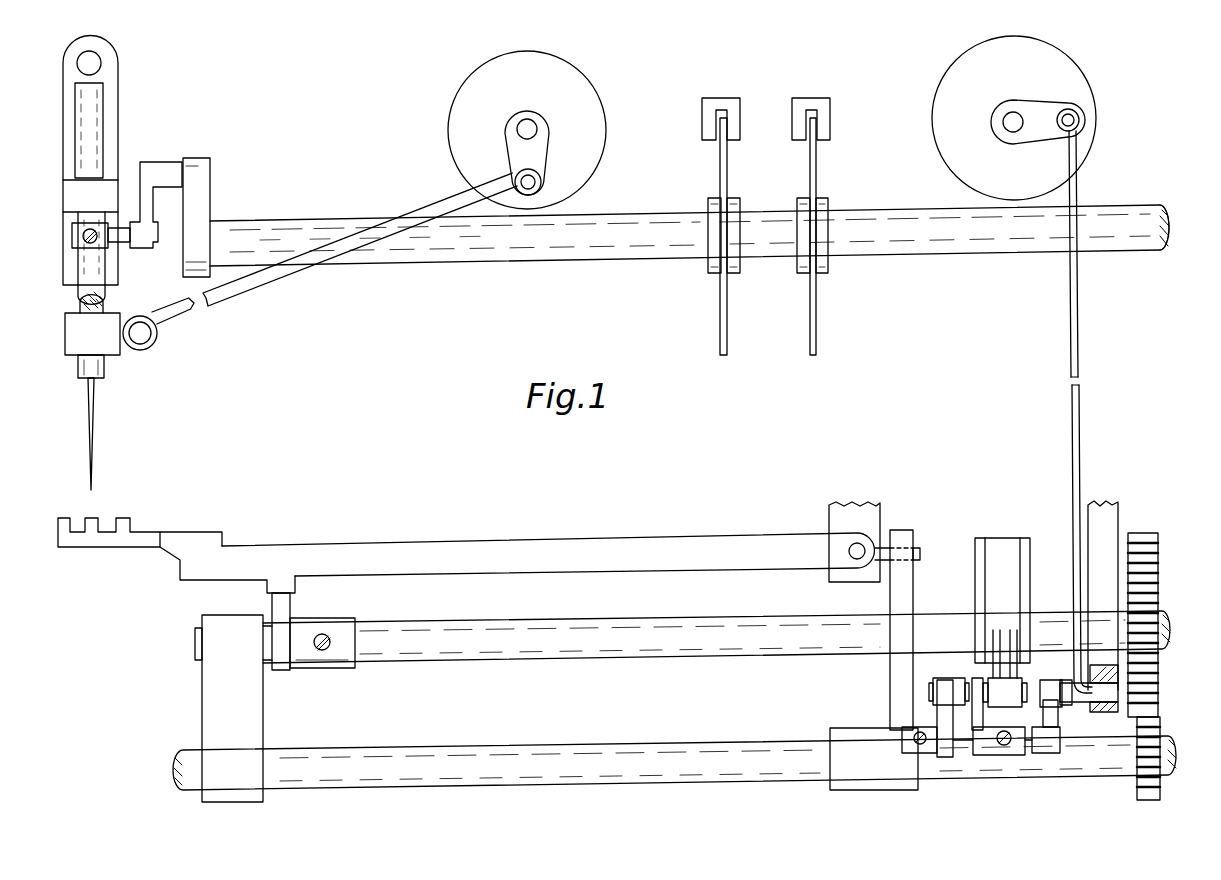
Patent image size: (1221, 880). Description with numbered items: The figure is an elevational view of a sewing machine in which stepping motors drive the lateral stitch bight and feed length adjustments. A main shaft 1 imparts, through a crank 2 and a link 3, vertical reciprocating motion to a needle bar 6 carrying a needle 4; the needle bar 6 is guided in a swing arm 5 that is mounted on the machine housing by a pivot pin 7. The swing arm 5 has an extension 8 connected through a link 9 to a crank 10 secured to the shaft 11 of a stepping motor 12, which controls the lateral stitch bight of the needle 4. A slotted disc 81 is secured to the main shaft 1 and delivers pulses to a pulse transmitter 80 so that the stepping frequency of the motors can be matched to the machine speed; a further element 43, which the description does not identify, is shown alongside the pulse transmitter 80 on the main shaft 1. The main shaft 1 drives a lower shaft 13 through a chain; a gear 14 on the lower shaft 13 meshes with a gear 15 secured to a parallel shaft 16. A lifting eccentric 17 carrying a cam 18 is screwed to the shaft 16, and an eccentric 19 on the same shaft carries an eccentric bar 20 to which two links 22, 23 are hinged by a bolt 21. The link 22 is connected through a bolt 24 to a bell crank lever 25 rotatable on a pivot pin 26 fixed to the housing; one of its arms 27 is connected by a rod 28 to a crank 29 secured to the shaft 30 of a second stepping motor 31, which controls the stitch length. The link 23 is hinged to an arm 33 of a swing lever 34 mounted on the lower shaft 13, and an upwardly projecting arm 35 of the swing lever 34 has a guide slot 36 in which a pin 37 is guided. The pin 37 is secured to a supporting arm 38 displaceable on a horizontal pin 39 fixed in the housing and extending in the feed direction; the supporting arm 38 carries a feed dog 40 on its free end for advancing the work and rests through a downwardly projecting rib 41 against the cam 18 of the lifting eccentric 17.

The main shaft 1 is at (500, 244).
The crank 2 is at (205, 203).
The link 3 is at (148, 212).
The needle 4 is at (95, 438).
The swing arm 5 is at (116, 123).
The needle bar 6 is at (96, 158).
The pivot pin 7 is at (93, 64).
The extension 8 is at (128, 347).
The link 9 is at (283, 270).
The crank 10 is at (540, 153).
The shaft of stepping motor 11 is at (537, 127).
The stepping motor 12 is at (580, 84).
The lower shaft 13 is at (668, 756).
The gear 14 is at (1161, 781).
The gear 15 is at (1152, 589).
The shaft 16 is at (748, 639).
The lifting eccentric 17 is at (345, 631).
The cam 18 is at (288, 608).
The eccentric 19 is at (1001, 553).
The eccentric bar 20 is at (1012, 678).
The bolt 21 is at (968, 680).
The link 22 is at (985, 713).
The link 23 is at (930, 710).
The bolt 24 is at (1030, 753).
The bell crank lever 25 is at (1062, 736).
The pivot pin 26 is at (1105, 701).
The arm 27 is at (1068, 703).
The rod 28 is at (1078, 403).
The crank 29 is at (1043, 106).
The shaft of second stepping motor 30 is at (1008, 128).
The second stepping motor 31 is at (953, 81).
The arm 33 is at (922, 756).
The swing lever 34 is at (836, 782).
The upwardly projecting arm 35 is at (913, 606).
The guide slot 36 is at (905, 580).
The pin 37 is at (920, 552).
The supporting arm 38 is at (658, 545).
The horizontal pin 39 is at (857, 560).
The feed dog 40 is at (114, 540).
The rib 41 is at (268, 585).
The thread guide bracket 43 is at (819, 104).
The pulse transmitter 80 is at (722, 104).
The slotted disc 81 is at (728, 176).